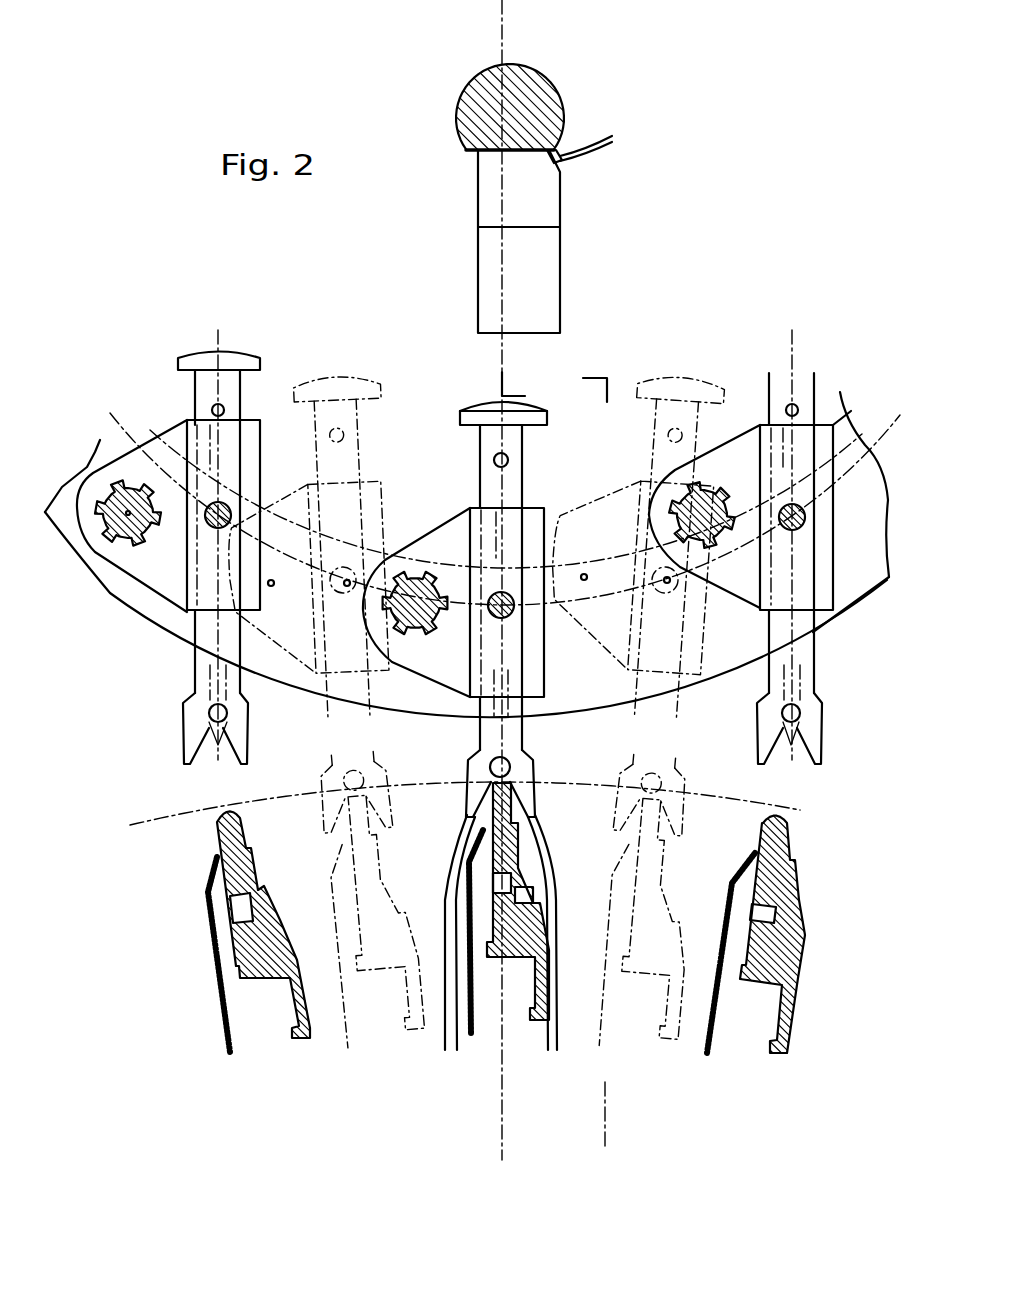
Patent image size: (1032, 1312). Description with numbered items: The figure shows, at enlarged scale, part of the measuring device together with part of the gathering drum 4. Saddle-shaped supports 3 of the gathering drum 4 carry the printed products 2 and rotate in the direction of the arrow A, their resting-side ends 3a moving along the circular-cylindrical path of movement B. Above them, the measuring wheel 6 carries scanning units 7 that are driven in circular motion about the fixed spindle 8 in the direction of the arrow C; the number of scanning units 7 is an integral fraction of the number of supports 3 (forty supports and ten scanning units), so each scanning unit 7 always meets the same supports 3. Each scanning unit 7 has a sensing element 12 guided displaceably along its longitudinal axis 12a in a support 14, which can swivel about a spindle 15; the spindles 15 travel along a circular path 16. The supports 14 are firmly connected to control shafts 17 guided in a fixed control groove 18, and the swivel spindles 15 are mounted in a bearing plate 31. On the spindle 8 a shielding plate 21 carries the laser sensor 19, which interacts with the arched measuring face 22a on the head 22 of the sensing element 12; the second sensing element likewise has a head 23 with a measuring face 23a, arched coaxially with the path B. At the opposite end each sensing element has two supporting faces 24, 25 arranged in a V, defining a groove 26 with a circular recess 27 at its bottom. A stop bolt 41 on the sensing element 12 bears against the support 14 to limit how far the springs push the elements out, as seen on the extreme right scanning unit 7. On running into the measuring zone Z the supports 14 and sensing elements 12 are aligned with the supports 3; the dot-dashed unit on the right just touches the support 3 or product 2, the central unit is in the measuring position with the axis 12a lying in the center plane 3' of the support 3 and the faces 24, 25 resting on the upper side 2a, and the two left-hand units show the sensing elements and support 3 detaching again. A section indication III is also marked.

The printed products 2 is at (452, 1021).
The upper side of the printing product 2a is at (456, 890).
The saddle-shaped supports 3 is at (768, 959).
The ends of the supports on the resting side 3a is at (216, 812).
The center plane of the support 3' is at (526, 1145).
The gathering drum 4 is at (180, 968).
The measuring wheel 6 is at (112, 594).
The scanning units 7 is at (272, 350).
The fixed spindle 8 is at (548, 88).
The sensing element 12 is at (195, 388).
The longitudinal axis of the sensing element 12a is at (222, 389).
The support (housing) 14 is at (540, 513).
The spindle 15 is at (229, 511).
The circular path 16 is at (853, 463).
The control shafts 17 is at (121, 493).
The control groove 18 is at (172, 533).
The laser sensor 19 is at (555, 188).
The shielding plate 21 is at (560, 273).
The head 22 is at (461, 418).
The arched measuring face 22a is at (468, 398).
The head 23 is at (546, 408).
The arched measuring face 23a is at (538, 393).
The supporting face 24 is at (762, 764).
The supporting face 25 is at (818, 764).
The groove 26 is at (794, 750).
The recess 27 is at (801, 714).
The bearing plate 31 is at (857, 600).
The stop bolt 41 is at (509, 463).
The direction of rotation A is at (160, 870).
The path of movement B is at (143, 823).
The direction of circular motion C is at (790, 236).
The measuring zone Z is at (573, 810).
The section III is at (607, 1148).